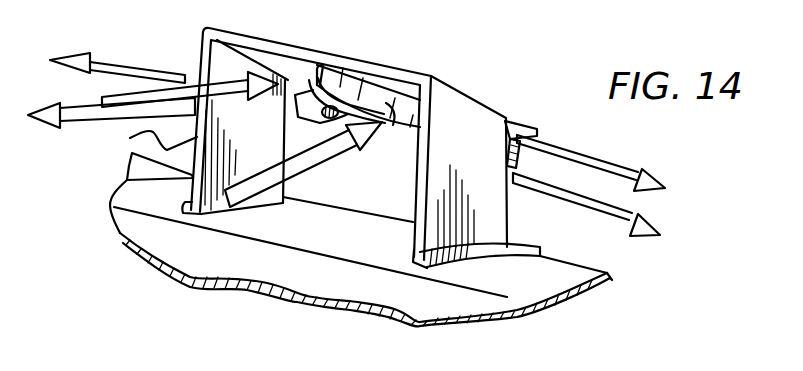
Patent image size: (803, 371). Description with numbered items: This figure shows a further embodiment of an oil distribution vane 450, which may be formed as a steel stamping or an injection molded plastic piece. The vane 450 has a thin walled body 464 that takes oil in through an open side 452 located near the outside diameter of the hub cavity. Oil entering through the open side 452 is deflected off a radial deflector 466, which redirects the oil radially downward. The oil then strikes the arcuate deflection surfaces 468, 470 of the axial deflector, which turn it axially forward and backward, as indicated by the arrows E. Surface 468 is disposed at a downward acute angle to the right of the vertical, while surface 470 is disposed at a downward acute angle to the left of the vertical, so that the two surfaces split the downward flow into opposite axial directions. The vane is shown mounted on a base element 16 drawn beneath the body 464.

The vane 450 is at (412, 50).
The thin walled body 464 is at (465, 130).
The radial deflector 466 is at (322, 50).
The arcuate deflection surface 468 is at (392, 126).
The arcuate deflection surface 470 is at (300, 117).
The open side 452 is at (130, 138).
The base plate 16 is at (388, 285).
The arrow E is at (95, 65).